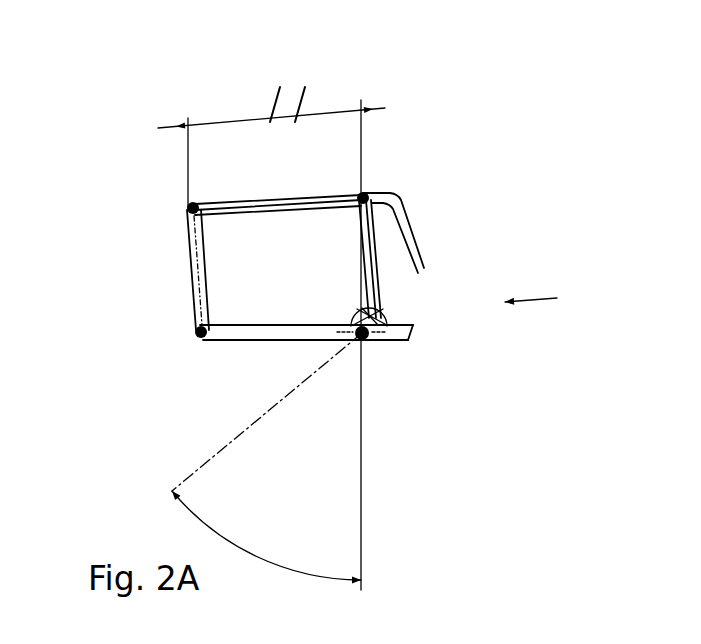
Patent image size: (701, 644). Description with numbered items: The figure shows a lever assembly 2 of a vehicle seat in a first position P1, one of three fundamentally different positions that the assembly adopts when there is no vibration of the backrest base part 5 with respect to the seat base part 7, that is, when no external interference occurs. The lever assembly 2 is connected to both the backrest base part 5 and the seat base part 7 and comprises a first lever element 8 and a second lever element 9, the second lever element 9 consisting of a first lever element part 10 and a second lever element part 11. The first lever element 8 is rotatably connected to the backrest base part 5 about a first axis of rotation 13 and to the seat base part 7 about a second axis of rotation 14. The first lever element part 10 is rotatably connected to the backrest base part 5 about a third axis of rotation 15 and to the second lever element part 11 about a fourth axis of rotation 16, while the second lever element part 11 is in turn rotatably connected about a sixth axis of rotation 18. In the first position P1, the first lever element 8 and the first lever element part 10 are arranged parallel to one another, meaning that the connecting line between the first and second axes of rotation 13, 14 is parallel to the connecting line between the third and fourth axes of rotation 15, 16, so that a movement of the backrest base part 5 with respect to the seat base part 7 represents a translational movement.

The lever assembly 2 is at (112, 97).
The first position P1 is at (503, 39).
The backrest base part 5 is at (398, 195).
The seat base part 7 is at (268, 333).
The first lever element 8 is at (187, 260).
The second lever element 9 is at (539, 299).
The first lever element part 10 is at (380, 268).
The second lever element part 11 is at (389, 316).
The first axis of rotation 13 is at (189, 209).
The second axis of rotation 14 is at (198, 332).
The third axis of rotation 15 is at (370, 196).
The fourth axis of rotation 16 is at (362, 312).
The sixth axis of rotation 18 is at (366, 342).